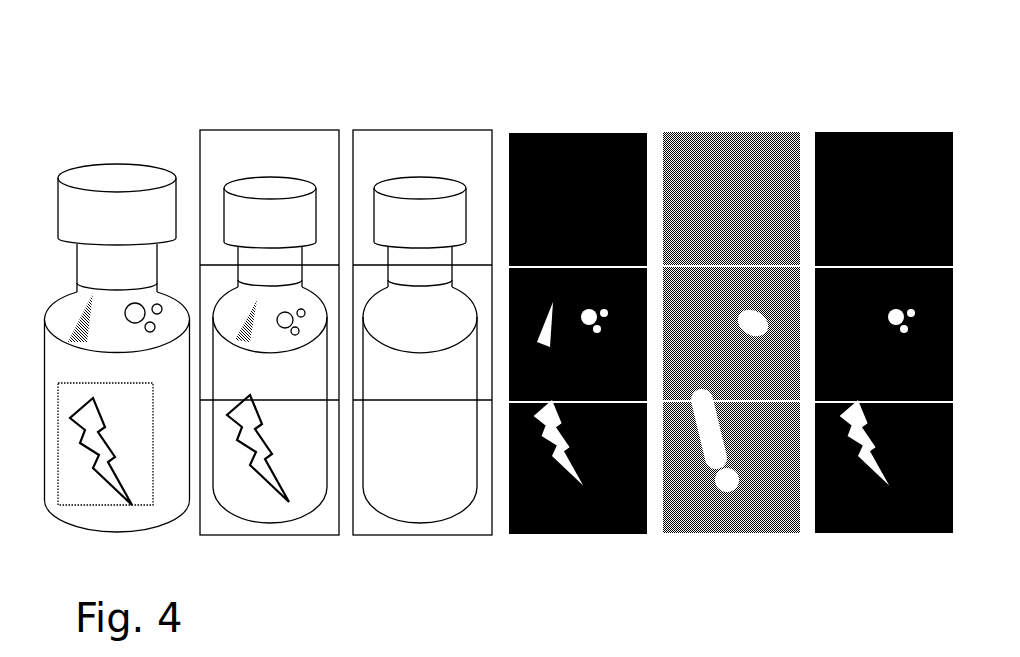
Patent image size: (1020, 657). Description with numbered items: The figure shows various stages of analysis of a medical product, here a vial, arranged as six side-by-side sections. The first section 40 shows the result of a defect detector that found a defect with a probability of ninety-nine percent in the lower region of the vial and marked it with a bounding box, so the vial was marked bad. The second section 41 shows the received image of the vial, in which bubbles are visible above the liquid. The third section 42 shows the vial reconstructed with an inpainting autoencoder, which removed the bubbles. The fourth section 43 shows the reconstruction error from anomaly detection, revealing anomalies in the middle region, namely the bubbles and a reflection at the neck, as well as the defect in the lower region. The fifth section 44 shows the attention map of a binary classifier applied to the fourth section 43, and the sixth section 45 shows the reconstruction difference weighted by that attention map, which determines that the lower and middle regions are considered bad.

The first section 40 is at (118, 157).
The second section 41 is at (278, 125).
The third section 42 is at (390, 125).
The fourth section 43 is at (552, 127).
The fifth section 44 is at (715, 127).
The sixth section 45 is at (867, 127).